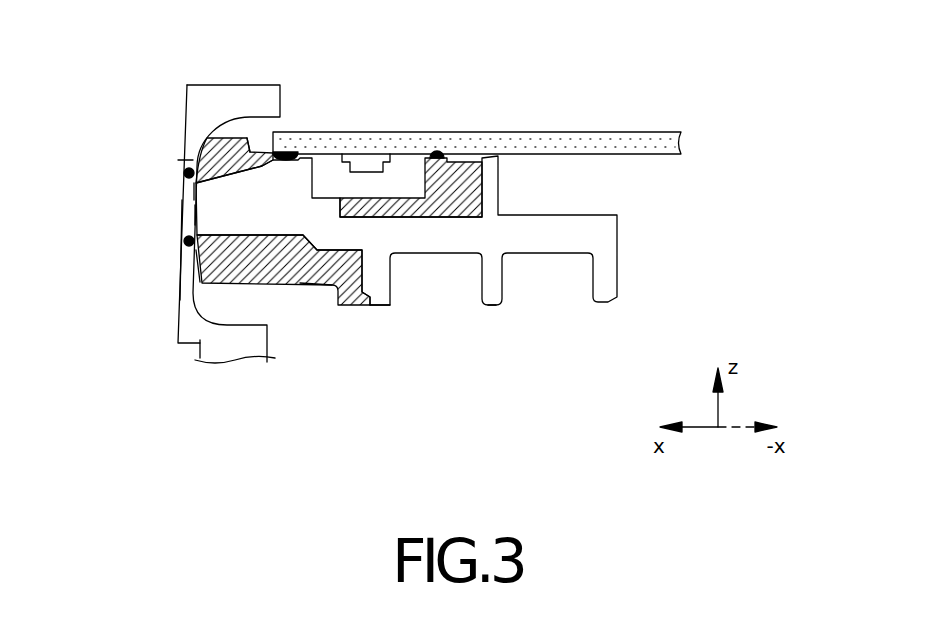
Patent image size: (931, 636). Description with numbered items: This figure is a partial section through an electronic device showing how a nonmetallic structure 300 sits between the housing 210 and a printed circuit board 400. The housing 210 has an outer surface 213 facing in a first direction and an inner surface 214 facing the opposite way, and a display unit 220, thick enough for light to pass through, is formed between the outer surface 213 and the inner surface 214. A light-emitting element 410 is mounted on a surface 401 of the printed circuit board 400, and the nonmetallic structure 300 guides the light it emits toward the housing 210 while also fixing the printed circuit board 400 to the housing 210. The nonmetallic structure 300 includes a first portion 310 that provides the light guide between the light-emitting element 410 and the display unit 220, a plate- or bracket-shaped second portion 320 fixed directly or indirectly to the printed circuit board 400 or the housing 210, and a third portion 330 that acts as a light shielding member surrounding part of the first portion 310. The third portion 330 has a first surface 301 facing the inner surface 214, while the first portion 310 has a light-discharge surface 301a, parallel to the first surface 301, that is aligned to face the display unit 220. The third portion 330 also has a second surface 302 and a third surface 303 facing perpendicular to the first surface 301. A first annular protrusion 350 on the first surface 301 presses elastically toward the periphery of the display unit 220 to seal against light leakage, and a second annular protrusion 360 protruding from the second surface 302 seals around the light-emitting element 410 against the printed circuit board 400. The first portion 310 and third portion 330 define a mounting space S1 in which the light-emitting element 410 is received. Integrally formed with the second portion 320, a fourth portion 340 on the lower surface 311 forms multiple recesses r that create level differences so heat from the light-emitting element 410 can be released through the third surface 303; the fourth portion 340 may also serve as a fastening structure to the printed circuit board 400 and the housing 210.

The housing 210 is at (190, 104).
The outer surface 213 is at (178, 320).
The inner surface 214 is at (230, 316).
The display unit 220 is at (180, 197).
The nonmetallic structure 300 is at (650, 234).
The first surface 301 is at (193, 262).
The light-discharge surface 301a is at (193, 216).
The second surface 302 is at (255, 152).
The third surface 303 is at (322, 287).
The first portion 310 is at (228, 182).
The lower surface 311 is at (375, 310).
The second portion 320 is at (430, 240).
The third portion 330 is at (302, 270).
The fourth portion 340 is at (494, 302).
The first annular protrusion 350 is at (186, 171).
The second annular protrusion 360 is at (290, 152).
The printed circuit board 400 is at (641, 128).
The surface of the printed circuit board 401 is at (560, 156).
The light-emitting element 410 is at (365, 167).
The mounting space S1 is at (420, 170).
The recesses r is at (470, 280).